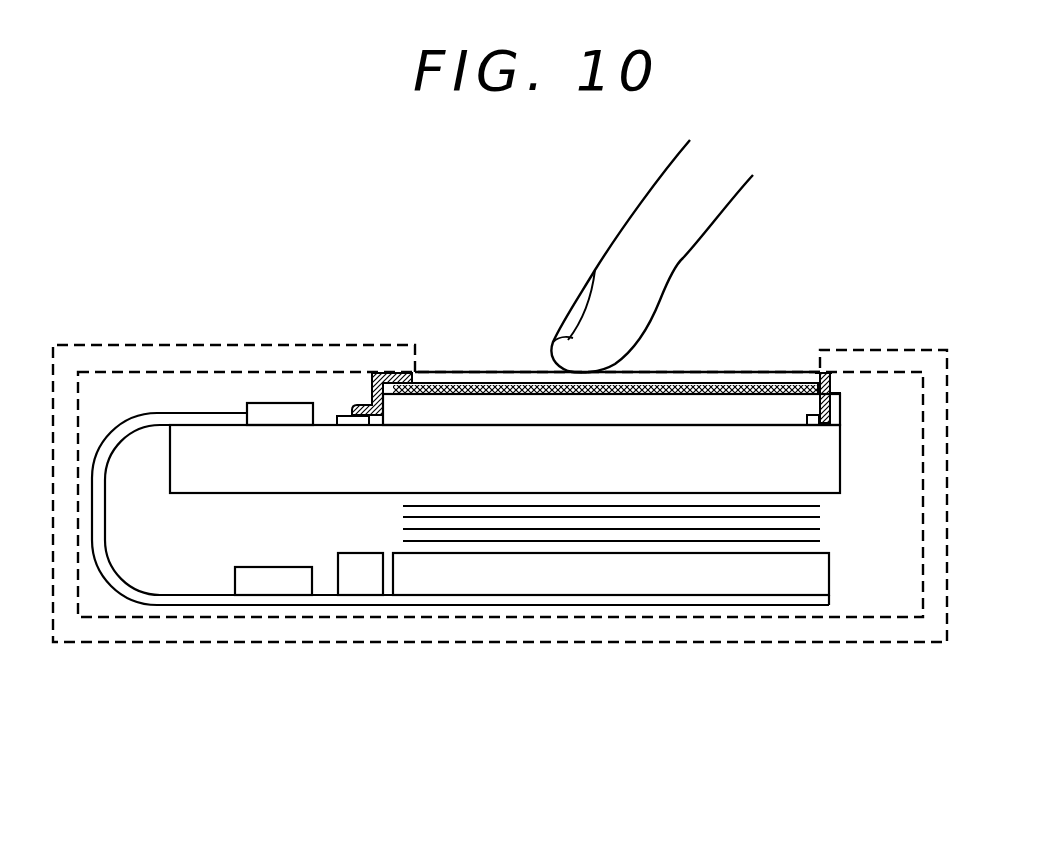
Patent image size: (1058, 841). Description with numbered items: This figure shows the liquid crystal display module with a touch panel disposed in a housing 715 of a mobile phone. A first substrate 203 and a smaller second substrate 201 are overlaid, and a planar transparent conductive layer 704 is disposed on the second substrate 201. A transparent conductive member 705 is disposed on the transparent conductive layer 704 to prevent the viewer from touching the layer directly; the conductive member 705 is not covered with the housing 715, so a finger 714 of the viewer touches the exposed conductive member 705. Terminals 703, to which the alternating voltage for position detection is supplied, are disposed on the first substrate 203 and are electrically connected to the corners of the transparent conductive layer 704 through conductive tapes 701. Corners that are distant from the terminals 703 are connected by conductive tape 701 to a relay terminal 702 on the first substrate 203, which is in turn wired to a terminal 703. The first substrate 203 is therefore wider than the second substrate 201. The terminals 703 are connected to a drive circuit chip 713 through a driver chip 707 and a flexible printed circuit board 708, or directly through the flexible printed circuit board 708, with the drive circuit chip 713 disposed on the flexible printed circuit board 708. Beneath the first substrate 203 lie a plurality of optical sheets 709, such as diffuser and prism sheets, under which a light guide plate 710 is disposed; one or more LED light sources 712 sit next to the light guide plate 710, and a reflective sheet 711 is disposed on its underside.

The second substrate 201 is at (732, 392).
The first substrate 203 is at (825, 466).
The conductive tape 701 is at (382, 374).
The relay terminal 702 is at (825, 424).
The terminal 703 is at (345, 418).
The transparent conductive layer 704 is at (467, 390).
The transparent conductive member 705 is at (438, 383).
The driver chip 707 is at (263, 410).
The flexible printed circuit board 708 is at (118, 448).
The optical sheets 709 is at (840, 505).
The light guide plate 710 is at (820, 579).
The reflective sheet 711 is at (825, 606).
The LED light source 712 is at (372, 588).
The drive circuit chip 713 is at (260, 587).
The finger 714 is at (630, 270).
The housing 715 is at (317, 636).